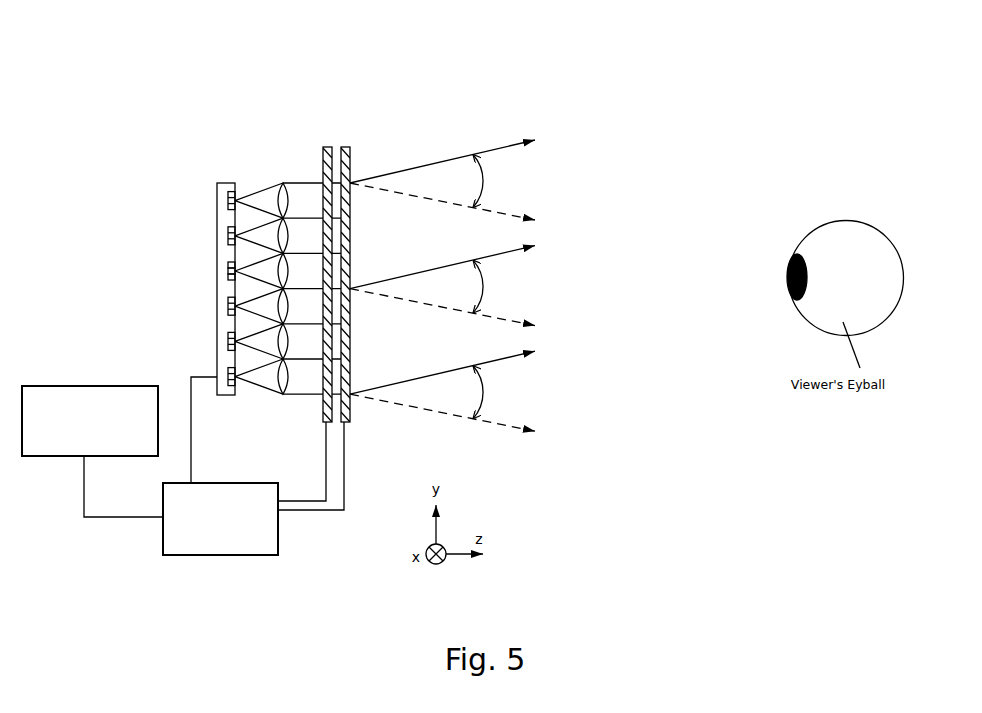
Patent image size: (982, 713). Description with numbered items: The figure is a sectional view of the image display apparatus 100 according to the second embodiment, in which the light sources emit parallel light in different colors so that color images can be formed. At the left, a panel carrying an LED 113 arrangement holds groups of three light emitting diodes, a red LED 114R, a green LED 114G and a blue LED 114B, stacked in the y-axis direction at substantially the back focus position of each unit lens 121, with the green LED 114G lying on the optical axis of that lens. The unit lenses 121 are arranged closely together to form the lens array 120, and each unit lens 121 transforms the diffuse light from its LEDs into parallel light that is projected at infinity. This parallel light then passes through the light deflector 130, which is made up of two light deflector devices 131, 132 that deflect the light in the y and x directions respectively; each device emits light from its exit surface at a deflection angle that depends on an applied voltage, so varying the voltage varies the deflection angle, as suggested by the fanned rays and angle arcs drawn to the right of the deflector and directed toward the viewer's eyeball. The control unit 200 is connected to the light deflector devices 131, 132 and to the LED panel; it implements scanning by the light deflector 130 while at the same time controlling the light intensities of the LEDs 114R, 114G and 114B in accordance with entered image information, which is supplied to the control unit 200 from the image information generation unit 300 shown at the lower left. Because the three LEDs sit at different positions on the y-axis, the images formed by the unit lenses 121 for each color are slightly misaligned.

The image display apparatus 100 is at (228, 95).
The LED 113 is at (222, 186).
The red LED 114R is at (228, 265).
The green LED 114G is at (228, 271).
The blue LED 114B is at (228, 277).
The lens array 120 is at (282, 182).
The unit lens 121 is at (283, 393).
The light deflector 130 is at (398, 46).
The light deflector device 131 is at (327, 147).
The light deflector device 132 is at (348, 147).
The control unit 200 is at (221, 529).
The image information generation unit 300 is at (90, 432).